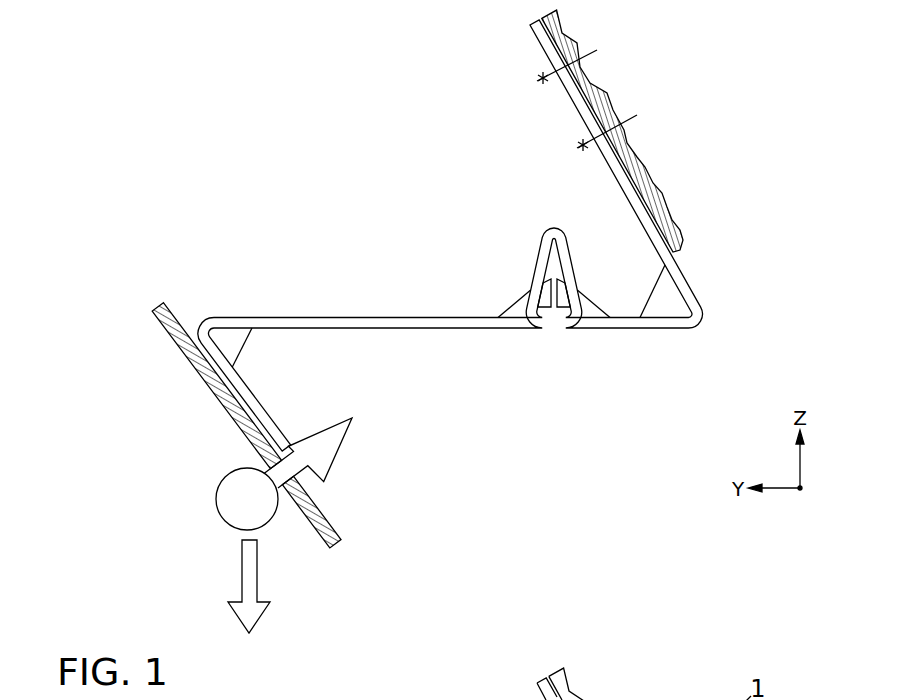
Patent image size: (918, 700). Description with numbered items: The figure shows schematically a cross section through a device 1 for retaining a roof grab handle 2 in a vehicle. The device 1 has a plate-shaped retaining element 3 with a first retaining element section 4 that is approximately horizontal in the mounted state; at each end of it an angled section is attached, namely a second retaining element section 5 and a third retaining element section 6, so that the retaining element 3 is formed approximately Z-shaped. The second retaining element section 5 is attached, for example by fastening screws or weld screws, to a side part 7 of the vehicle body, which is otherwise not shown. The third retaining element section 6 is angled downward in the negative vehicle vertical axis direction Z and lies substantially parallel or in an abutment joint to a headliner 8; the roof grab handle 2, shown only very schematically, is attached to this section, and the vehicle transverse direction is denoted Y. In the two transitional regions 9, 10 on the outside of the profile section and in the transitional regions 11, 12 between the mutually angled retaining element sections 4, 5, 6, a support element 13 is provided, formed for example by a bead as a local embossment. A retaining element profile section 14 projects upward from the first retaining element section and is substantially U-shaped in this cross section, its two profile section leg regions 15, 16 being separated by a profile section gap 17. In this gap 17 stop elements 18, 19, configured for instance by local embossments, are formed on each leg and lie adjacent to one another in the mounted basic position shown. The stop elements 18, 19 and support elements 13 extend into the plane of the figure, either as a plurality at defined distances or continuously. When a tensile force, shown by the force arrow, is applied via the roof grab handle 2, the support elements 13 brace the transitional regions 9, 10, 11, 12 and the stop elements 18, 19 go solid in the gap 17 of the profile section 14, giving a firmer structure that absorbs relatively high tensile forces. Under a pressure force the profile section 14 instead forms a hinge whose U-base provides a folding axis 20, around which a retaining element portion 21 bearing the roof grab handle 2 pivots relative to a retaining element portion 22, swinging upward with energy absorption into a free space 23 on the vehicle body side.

The device 1 is at (696, 76).
The roof grab handle 2 is at (238, 511).
The retaining element 3 is at (290, 203).
The first retaining element section 4 is at (287, 322).
The second retaining element section 5 is at (668, 260).
The third retaining element section 6 is at (268, 427).
The side part 7 is at (652, 195).
The headliner 8 is at (235, 417).
The transitional region 9 is at (478, 280).
The transitional region 10 is at (592, 279).
The transitional region 11 is at (639, 284).
The transitional region 12 is at (268, 353).
The support element 13 is at (222, 343).
The retaining element profile section 14 is at (554, 342).
The profile section leg region 15 is at (540, 260).
The profile section leg region 16 is at (566, 260).
The profile section gap 17 is at (553, 260).
The stop element 18 is at (544, 297).
The stop element 19 is at (562, 297).
The folding axis 20 is at (553, 229).
The retaining element portion 21 is at (381, 349).
The retaining element portion 22 is at (652, 347).
The free space 23 is at (409, 133).